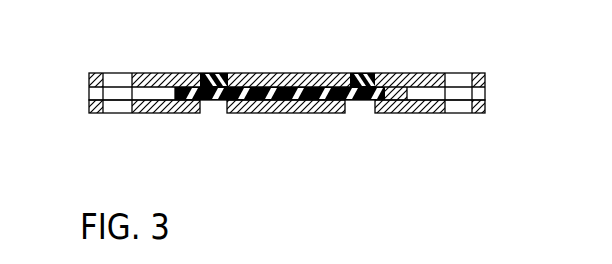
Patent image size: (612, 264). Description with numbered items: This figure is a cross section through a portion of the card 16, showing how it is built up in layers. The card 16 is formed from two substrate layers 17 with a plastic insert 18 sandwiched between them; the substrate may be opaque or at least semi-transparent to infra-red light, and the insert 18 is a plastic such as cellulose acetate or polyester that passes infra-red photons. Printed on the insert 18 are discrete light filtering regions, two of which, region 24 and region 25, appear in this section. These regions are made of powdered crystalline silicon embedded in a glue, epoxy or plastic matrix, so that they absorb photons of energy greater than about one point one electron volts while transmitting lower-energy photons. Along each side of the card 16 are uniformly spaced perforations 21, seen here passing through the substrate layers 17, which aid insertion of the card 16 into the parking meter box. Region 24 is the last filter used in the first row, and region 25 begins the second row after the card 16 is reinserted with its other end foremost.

The card 16 is at (502, 76).
The substrate layers 17 is at (258, 73).
The plastic insert 18 is at (288, 113).
The perforations 21 is at (116, 73).
The light filtering region 24 is at (212, 73).
The light filtering region 25 is at (360, 73).